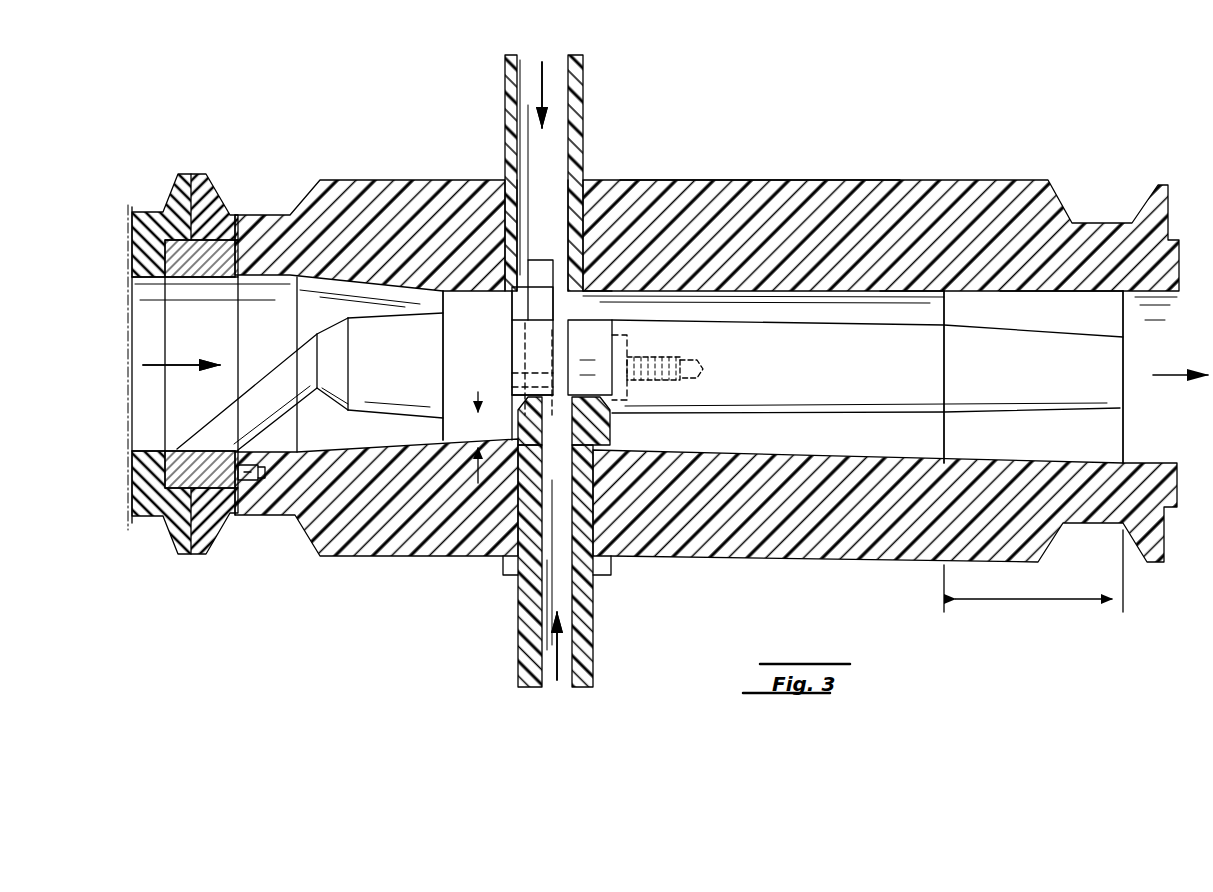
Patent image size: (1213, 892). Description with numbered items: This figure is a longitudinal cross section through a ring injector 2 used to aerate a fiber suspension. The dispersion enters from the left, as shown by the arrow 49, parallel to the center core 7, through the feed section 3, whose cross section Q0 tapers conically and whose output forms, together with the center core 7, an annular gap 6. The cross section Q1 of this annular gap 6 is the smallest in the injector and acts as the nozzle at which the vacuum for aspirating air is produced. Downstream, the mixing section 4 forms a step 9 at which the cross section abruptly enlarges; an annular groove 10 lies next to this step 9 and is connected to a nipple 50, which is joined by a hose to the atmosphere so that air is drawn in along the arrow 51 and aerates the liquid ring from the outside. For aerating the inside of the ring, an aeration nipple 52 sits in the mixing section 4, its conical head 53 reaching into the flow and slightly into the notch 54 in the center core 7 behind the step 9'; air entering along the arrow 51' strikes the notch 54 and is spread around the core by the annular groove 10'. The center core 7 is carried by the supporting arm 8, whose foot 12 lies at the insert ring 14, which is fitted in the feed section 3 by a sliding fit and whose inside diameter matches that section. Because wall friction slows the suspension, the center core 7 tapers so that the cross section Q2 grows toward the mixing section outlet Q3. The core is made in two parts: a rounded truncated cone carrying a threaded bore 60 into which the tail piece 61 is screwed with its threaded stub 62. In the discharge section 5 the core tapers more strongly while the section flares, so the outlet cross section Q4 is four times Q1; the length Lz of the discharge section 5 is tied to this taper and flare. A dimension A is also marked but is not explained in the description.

The ring injector 2 is at (807, 168).
The feed section 3 is at (278, 292).
The mixing section 4 is at (750, 305).
The discharge section 5 is at (1030, 305).
The annular gap 6 is at (460, 292).
The center core 7 is at (855, 430).
The supporting arm 8 is at (280, 385).
The step 9 is at (517, 351).
The step 9' is at (509, 383).
The annular groove 10 is at (540, 250).
The annular groove 10' is at (590, 357).
The foot of the supporting arm 12 is at (183, 447).
The insert ring 14 is at (230, 480).
The arrow 49 is at (180, 368).
The nipple 50 is at (583, 88).
The arrow 51 is at (496, 95).
The arrow 51' is at (508, 646).
The aeration nipple 52 is at (580, 640).
The conical head 53 is at (605, 425).
The notch 54 is at (612, 396).
The threaded bore 60 is at (655, 360).
The tail piece 61 is at (897, 338).
The threaded stub 62 is at (703, 370).
The cross section of the feed section Q0 is at (278, 292).
The cross section of the annular gap Q1 is at (460, 292).
The cross section in the mixing section Q2 is at (585, 306).
The cross section at the mixing section outlet Q3 is at (946, 312).
The cross section at the discharge outlet Q4 is at (1122, 312).
The gap width A is at (478, 425).
The length of the discharge section Lz is at (1033, 600).